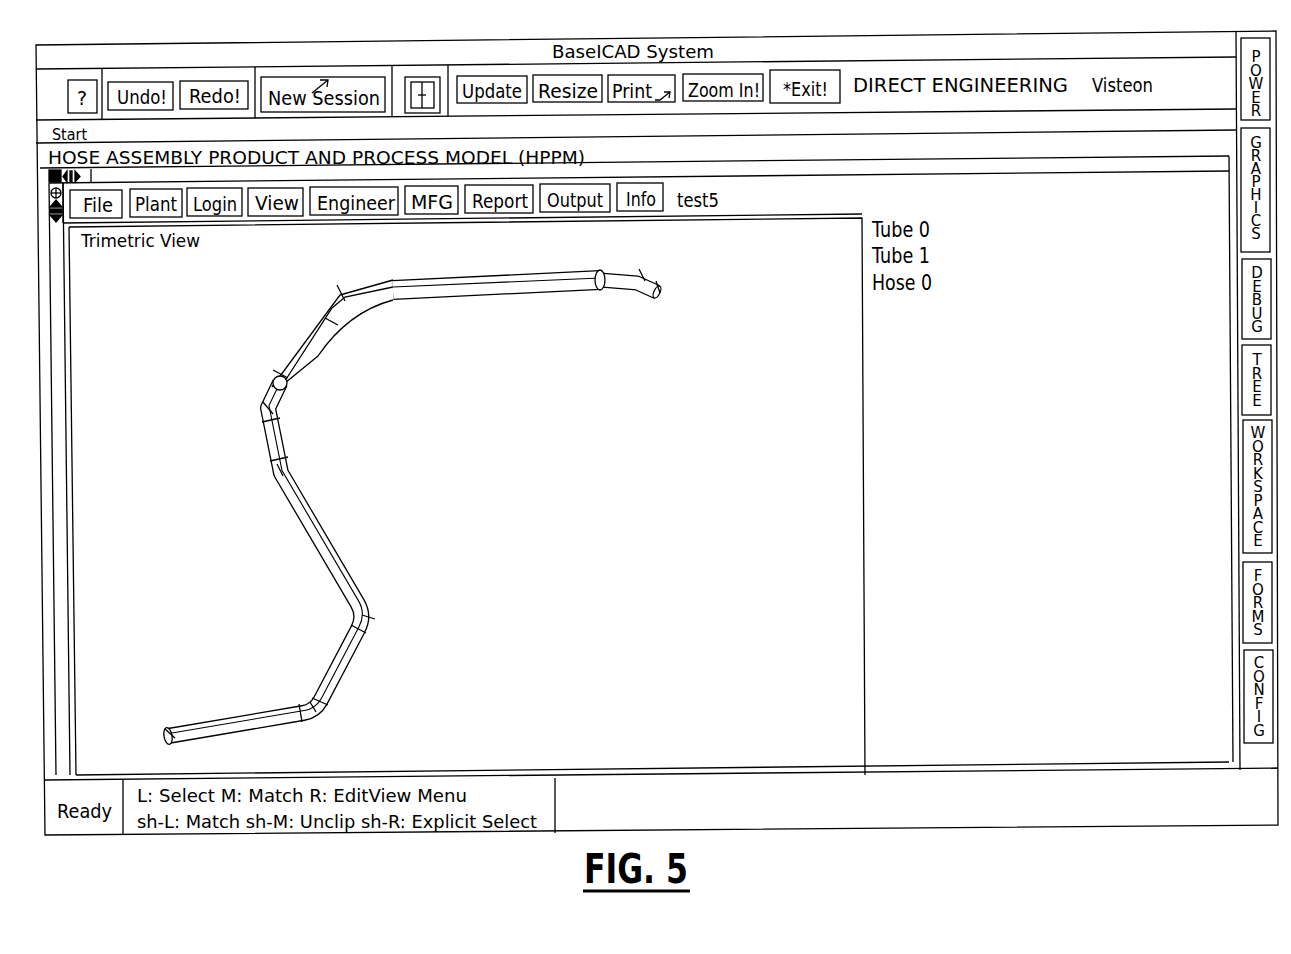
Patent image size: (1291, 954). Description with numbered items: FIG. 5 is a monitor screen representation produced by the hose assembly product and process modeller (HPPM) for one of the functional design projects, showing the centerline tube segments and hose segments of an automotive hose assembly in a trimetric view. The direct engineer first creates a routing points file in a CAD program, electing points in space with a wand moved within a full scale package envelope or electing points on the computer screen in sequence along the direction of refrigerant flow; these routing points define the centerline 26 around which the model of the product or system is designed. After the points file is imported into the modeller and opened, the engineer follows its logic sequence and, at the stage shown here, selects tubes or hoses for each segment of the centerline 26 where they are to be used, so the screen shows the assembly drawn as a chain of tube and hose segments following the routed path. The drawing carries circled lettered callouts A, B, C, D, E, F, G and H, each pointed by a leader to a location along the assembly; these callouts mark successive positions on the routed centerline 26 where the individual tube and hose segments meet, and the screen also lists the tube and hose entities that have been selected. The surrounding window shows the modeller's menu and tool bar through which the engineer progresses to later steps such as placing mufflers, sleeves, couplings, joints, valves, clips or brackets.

The centerline 26 is at (307, 513).
The hose joint A is at (170, 733).
The hose joint B is at (313, 707).
The hose joint C is at (368, 617).
The hose joint D is at (280, 470).
The hose joint E is at (268, 408).
The hose joint F is at (342, 293).
The hose joint G is at (642, 275).
The hose joint H is at (658, 287).